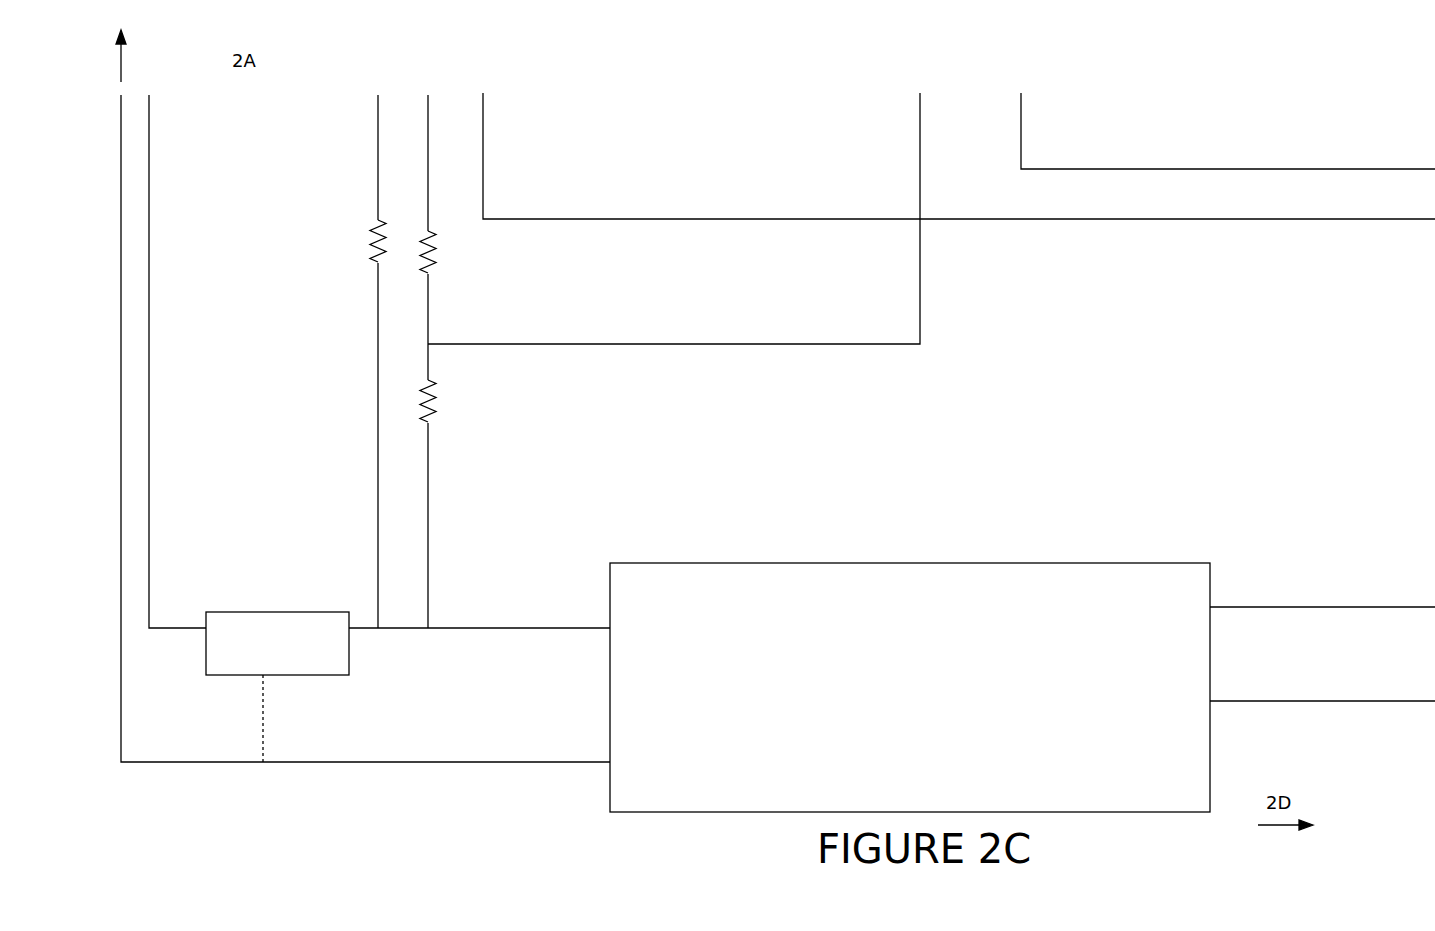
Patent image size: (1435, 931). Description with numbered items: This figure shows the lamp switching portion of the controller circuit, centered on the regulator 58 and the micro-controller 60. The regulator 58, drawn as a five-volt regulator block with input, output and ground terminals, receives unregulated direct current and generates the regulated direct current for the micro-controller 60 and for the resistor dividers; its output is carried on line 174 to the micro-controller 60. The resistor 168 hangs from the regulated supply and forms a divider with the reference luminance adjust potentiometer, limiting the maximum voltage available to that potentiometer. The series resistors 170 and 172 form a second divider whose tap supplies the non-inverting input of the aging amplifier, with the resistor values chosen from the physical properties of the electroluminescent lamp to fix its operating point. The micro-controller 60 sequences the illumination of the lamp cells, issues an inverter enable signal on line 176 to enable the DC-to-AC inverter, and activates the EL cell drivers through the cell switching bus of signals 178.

The regulator 58 is at (378, 572).
The micro-controller 60 is at (910, 673).
The resistor 168 is at (351, 361).
The resistor 170 is at (453, 219).
The resistor 172 is at (453, 486).
The regulated 5-volt supply line 174 is at (412, 628).
The inverter enable line 176 is at (1260, 607).
The bus of signals 178 is at (1315, 701).